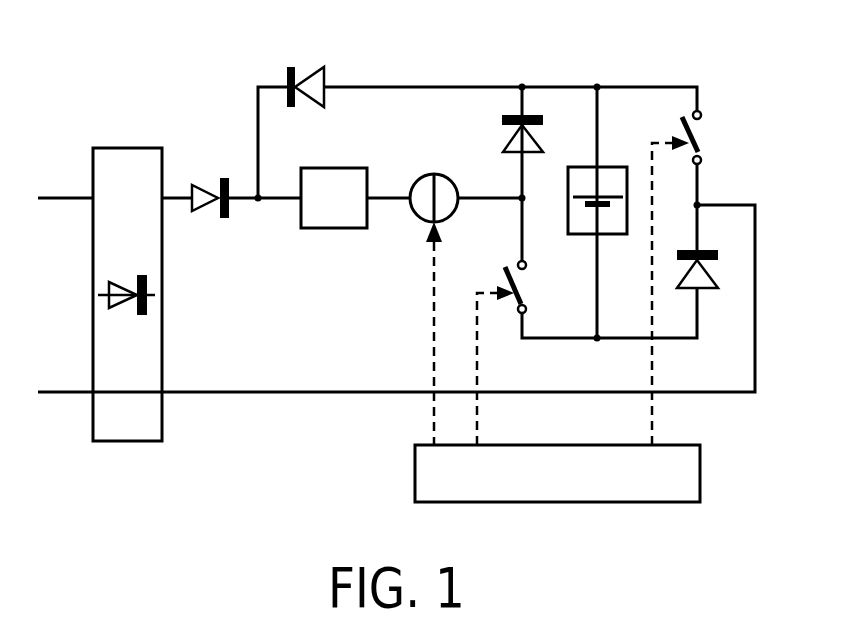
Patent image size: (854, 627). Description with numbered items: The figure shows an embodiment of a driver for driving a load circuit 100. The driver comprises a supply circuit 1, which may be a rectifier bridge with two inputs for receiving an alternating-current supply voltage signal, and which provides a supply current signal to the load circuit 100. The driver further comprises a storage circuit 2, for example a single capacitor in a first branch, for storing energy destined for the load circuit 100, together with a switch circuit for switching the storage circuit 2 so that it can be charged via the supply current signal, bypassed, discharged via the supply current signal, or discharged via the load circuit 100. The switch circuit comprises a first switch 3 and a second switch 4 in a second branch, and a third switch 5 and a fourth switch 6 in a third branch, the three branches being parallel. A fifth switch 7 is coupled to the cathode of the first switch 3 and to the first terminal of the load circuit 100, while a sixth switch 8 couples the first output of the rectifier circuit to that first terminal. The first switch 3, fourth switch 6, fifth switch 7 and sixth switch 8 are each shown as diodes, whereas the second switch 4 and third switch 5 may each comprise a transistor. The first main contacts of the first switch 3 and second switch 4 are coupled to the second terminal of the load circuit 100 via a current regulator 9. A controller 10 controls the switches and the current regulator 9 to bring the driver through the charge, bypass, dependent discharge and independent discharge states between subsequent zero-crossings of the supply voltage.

The supply circuit 1 is at (128, 148).
The storage circuit 2 is at (613, 167).
The first switch 3 is at (503, 140).
The second switch 4 is at (518, 287).
The third switch 5 is at (700, 138).
The fourth switch 6 is at (707, 288).
The fifth switch 7 is at (327, 75).
The sixth switch 8 is at (208, 212).
The current regulator 9 is at (423, 173).
The controller 10 is at (415, 475).
The load circuit 100 is at (335, 230).